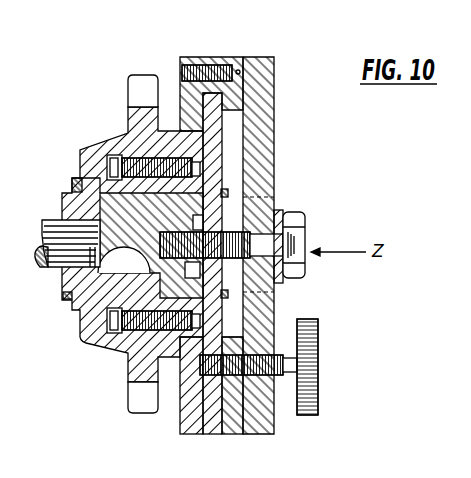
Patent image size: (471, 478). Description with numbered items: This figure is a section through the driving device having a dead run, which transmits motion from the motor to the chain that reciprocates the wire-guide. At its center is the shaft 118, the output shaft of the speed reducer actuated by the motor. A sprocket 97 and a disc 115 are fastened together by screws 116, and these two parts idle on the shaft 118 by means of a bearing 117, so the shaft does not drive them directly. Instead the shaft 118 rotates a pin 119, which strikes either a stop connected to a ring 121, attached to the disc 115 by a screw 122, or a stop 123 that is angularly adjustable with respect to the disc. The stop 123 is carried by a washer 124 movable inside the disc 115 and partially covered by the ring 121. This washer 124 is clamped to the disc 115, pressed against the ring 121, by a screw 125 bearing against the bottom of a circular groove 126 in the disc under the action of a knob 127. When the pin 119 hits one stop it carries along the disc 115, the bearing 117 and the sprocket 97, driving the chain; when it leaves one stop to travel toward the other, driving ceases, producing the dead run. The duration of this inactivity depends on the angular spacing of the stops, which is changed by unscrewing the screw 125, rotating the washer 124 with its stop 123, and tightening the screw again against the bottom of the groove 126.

The sprocket 97 is at (133, 130).
The disc 115 is at (203, 58).
The screws 116 is at (80, 166).
The bearing 117 is at (62, 209).
The shaft 118 is at (52, 268).
The pin 119 is at (266, 87).
The ring 121 is at (231, 428).
The screw 122 is at (181, 107).
The stop 123 is at (270, 428).
The washer 124 is at (216, 136).
The screw 125 is at (254, 360).
The circular groove 126 is at (160, 77).
The knob 127 is at (310, 360).